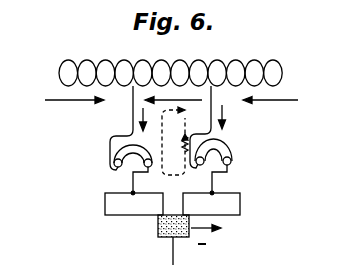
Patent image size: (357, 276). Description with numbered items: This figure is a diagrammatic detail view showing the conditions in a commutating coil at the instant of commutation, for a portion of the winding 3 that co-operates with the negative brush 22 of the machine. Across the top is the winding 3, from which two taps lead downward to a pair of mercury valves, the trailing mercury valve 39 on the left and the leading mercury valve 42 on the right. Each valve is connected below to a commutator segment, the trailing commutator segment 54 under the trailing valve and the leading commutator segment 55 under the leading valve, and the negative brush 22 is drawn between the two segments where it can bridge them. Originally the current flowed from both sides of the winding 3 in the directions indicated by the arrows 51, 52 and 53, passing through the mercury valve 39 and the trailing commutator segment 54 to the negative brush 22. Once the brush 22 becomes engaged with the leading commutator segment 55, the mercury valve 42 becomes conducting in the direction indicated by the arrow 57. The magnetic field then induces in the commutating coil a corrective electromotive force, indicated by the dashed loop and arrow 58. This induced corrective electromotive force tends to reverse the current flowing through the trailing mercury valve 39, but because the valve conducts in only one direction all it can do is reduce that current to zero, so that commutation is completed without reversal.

The winding 3 is at (228, 62).
The negative brush 22 is at (185, 238).
The mercury valve 39 is at (114, 146).
The mercury valve 42 is at (234, 150).
The arrow 51 is at (59, 102).
The arrow 52 is at (163, 101).
The arrow 53 is at (133, 118).
The arrow 57 is at (226, 118).
The arrow 58 is at (163, 127).
The trailing commutator segment 54 is at (108, 204).
The leading commutator segment 55 is at (240, 206).